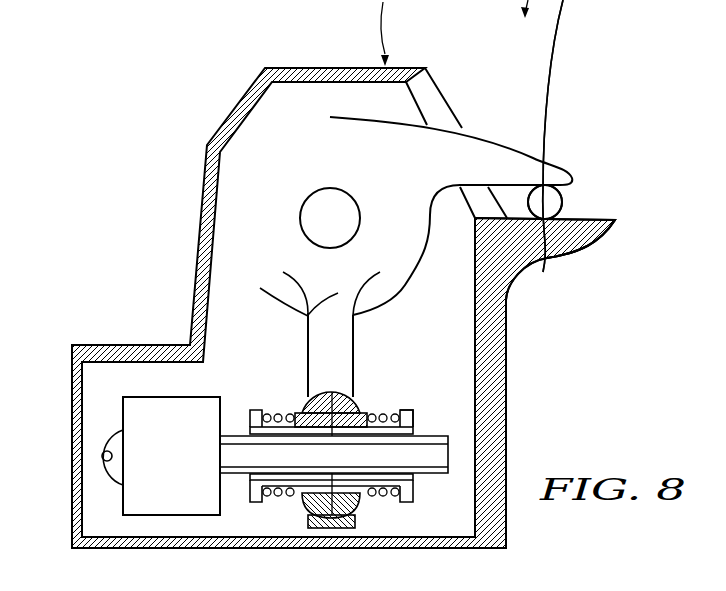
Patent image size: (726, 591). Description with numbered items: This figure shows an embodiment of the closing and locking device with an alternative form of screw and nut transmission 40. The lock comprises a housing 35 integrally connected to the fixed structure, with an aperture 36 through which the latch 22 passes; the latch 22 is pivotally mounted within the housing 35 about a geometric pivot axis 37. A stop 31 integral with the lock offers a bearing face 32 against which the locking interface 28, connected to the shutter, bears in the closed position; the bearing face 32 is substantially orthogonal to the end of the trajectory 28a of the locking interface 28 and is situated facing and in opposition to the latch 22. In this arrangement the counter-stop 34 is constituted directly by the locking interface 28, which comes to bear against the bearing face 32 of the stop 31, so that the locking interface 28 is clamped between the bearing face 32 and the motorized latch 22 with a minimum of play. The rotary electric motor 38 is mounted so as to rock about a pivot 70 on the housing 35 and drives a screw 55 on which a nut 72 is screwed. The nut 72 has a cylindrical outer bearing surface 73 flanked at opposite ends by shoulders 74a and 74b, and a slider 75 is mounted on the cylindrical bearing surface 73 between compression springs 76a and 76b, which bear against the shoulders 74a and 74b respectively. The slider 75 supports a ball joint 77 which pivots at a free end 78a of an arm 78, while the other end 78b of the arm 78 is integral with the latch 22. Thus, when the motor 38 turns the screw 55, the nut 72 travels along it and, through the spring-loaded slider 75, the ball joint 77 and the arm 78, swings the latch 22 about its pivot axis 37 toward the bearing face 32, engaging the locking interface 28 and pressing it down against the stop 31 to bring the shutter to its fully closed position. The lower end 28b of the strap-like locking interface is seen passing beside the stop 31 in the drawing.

The latch 22 is at (464, 150).
The locking interface 28 is at (556, 200).
The trajectory of the locking interface 28a is at (553, 42).
The strap lower end 28b is at (533, 247).
The stop 31 is at (573, 240).
The bearing face 32 is at (614, 220).
The counter-stop 34 is at (545, 202).
The housing 35 is at (195, 275).
The aperture 36 is at (430, 89).
The geometric pivot axis 37 is at (330, 218).
The rotary electric motor 38 is at (183, 498).
The transmission 40 is at (441, 362).
The screw 55 is at (443, 467).
The pivot 70 is at (101, 456).
The nut 72 is at (412, 429).
The cylindrical outer bearing surface 73 is at (401, 438).
The shoulder 74a is at (406, 503).
The shoulder 74b is at (255, 503).
The slider 75 is at (369, 397).
The compression spring 76a is at (397, 496).
The compression spring 76b is at (287, 496).
The ball joint 77 is at (325, 508).
The arm 78 is at (298, 362).
The free end of the arm 78a is at (334, 516).
The other end of the arm 78b is at (306, 314).